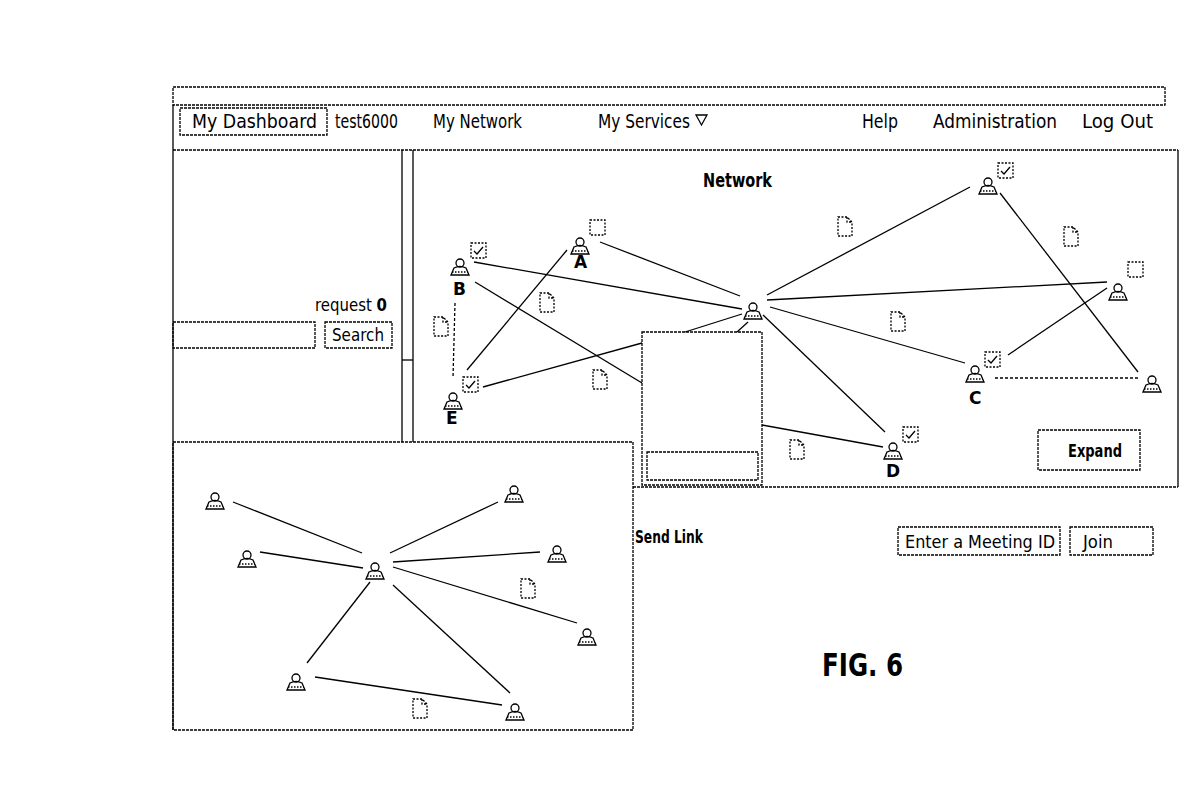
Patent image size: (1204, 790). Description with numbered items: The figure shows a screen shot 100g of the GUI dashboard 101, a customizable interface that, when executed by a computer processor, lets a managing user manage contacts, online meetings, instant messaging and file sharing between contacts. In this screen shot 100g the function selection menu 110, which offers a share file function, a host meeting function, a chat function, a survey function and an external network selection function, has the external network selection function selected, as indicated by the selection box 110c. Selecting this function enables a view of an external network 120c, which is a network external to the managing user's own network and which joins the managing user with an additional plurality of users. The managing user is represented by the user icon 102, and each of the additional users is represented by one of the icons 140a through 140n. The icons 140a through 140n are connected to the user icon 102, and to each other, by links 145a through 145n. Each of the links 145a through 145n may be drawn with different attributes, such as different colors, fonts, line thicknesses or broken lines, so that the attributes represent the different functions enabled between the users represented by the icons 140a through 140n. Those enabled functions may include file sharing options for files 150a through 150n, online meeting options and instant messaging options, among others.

The screen shot 100g is at (1106, 78).
The GUI dashboard 101 is at (610, 78).
The user icon 102 is at (748, 300).
The function selection menu 110 is at (752, 405).
The selection box 110c is at (742, 478).
The external network 120c is at (313, 452).
The icon 140a is at (215, 491).
The icon 140n is at (587, 627).
The link 145a is at (318, 535).
The link 145n is at (442, 526).
The file 150a is at (520, 586).
The file 150n is at (412, 710).